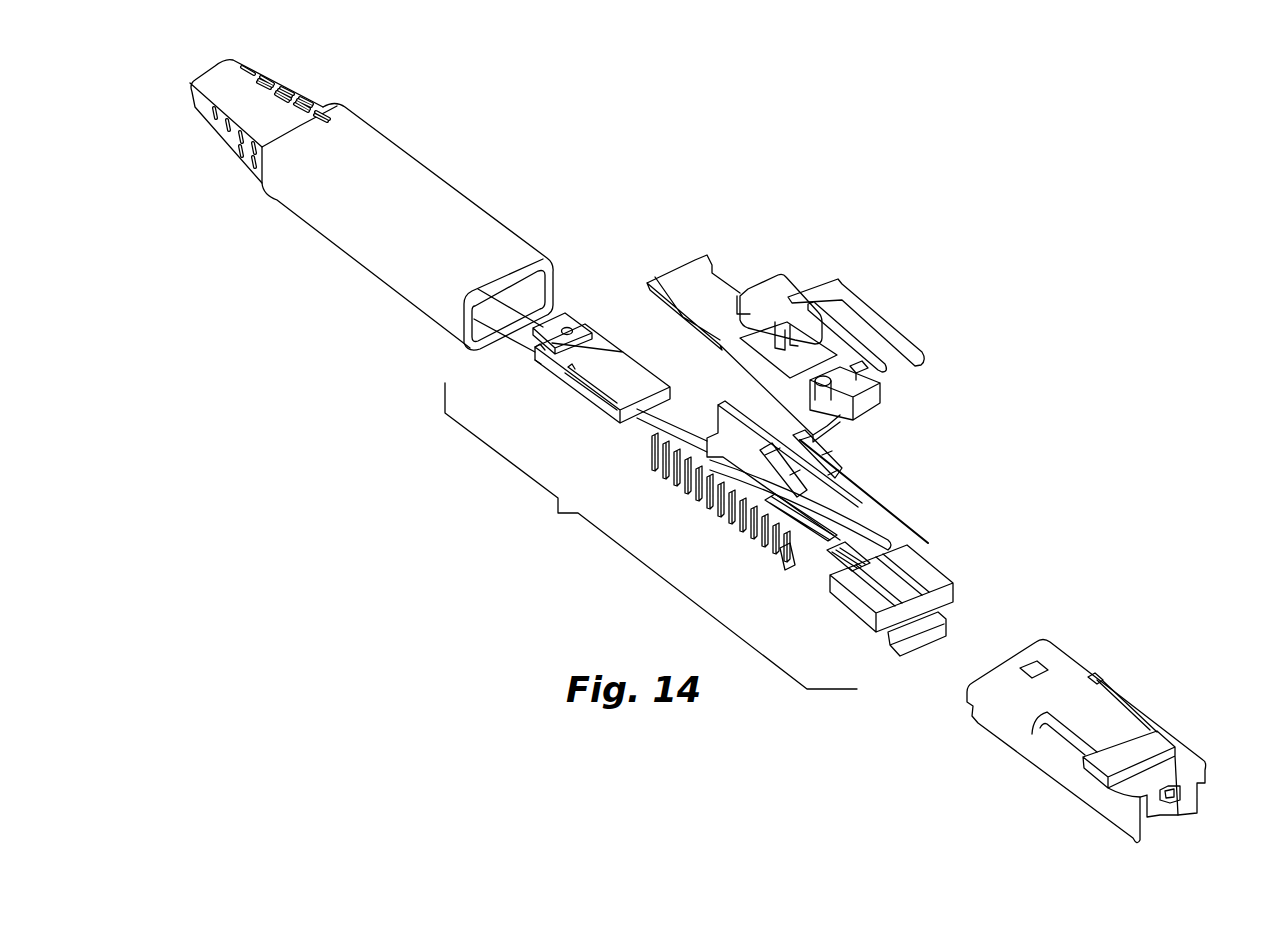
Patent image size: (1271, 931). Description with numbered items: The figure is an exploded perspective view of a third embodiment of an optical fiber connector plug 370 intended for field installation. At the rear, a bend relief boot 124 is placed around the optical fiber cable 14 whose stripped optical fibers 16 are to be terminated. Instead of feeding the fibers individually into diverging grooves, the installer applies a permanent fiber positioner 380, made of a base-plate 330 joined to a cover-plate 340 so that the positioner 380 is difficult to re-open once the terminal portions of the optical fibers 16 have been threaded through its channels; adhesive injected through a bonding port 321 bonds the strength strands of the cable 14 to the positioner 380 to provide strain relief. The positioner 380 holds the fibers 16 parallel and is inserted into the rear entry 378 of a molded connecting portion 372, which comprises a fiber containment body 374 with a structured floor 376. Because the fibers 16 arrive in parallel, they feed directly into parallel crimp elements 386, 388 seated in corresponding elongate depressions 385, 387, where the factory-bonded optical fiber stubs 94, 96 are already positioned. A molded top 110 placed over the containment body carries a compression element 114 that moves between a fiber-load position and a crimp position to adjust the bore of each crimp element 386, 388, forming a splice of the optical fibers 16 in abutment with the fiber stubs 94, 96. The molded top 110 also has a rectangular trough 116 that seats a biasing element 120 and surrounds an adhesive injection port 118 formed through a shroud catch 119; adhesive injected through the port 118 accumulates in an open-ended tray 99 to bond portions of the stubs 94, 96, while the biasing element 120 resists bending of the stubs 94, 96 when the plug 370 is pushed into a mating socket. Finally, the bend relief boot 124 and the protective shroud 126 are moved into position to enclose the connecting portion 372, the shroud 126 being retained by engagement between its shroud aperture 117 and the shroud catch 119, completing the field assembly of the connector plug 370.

The bend relief boot 124 is at (402, 187).
The optical fiber cable 14 is at (530, 313).
The bonding port 321 is at (570, 330).
The permanent fiber positioner 380 is at (600, 350).
The cover-plate 340 is at (535, 363).
The base-plate 330 is at (558, 380).
The optical fibers 16 is at (676, 438).
The molded top 110 is at (722, 275).
The compression element 114 is at (773, 290).
The optical fiber connector plug 370 is at (883, 270).
The biasing element 120 is at (907, 337).
The shroud catch 119 is at (860, 381).
The rectangular trough 116 is at (863, 393).
The adhesive injection port 118 is at (840, 387).
The crimp element 386 is at (813, 453).
The elongate depression 385 is at (817, 503).
The optical fiber stub 94 is at (903, 525).
The optical fiber stub 96 is at (887, 543).
The rear entry 378 is at (723, 460).
The crimp element 388 is at (778, 468).
The elongate depression 387 is at (787, 530).
The structured floor 376 is at (812, 558).
The open-ended tray 99 is at (840, 550).
The fiber containment body 374 is at (840, 607).
The molded connecting portion 372 is at (651, 536).
The shroud aperture 117 is at (1030, 662).
The protective shroud 126 is at (1062, 685).